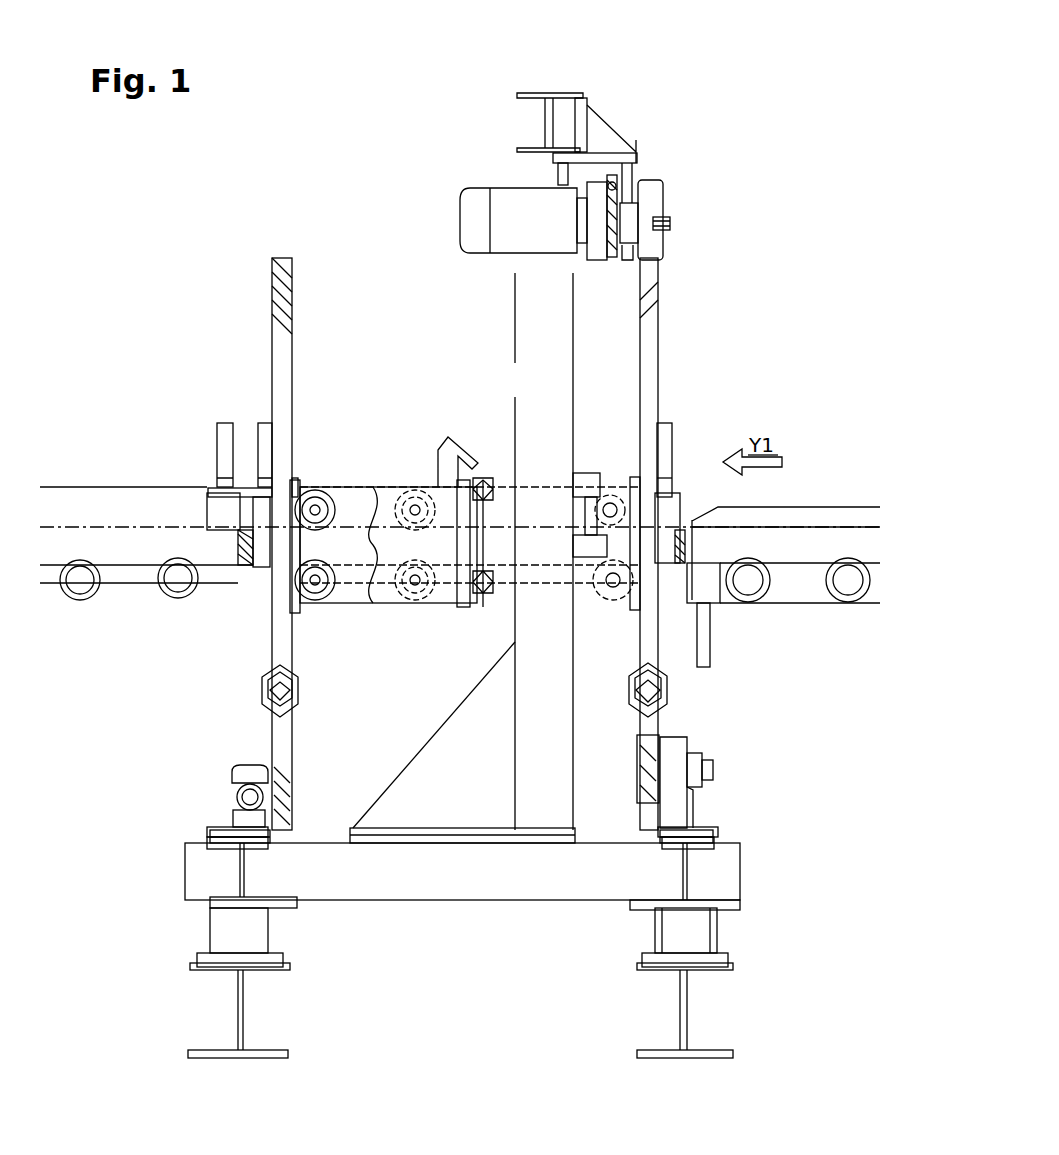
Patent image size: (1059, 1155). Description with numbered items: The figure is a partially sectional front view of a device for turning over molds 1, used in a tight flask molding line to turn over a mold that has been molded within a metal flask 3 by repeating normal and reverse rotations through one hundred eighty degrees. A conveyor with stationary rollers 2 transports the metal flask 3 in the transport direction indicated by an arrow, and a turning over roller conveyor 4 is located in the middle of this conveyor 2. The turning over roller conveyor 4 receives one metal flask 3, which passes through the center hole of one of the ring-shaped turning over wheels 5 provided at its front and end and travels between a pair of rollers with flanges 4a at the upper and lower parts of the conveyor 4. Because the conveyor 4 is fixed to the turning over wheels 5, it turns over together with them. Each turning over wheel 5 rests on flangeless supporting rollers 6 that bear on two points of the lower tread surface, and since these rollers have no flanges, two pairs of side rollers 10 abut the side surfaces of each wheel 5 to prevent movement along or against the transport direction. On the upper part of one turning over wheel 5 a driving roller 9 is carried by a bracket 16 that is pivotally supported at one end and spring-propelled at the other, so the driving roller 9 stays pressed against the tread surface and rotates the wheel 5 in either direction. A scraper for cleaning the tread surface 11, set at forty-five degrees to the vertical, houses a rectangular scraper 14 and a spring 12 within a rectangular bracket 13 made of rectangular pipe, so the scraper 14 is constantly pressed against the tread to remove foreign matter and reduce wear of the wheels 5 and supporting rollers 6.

The device for turning over molds 1 is at (633, 105).
The conveyor with stationary rollers 2 is at (78, 598).
The metal flask 3 is at (130, 553).
The turning over roller conveyor 4 is at (345, 597).
The rollers with flanges 4a is at (320, 500).
The turning over wheel 5 is at (280, 365).
The supporting roller 6 is at (666, 740).
The driving roller 9 is at (663, 200).
The side roller 10 is at (236, 775).
The scraper for cleaning the tread surface 11 is at (482, 698).
The spring 12 is at (264, 696).
The rectangular bracket 13 is at (295, 705).
The rectangular scraper 14 is at (287, 670).
The bracket 16 is at (656, 160).